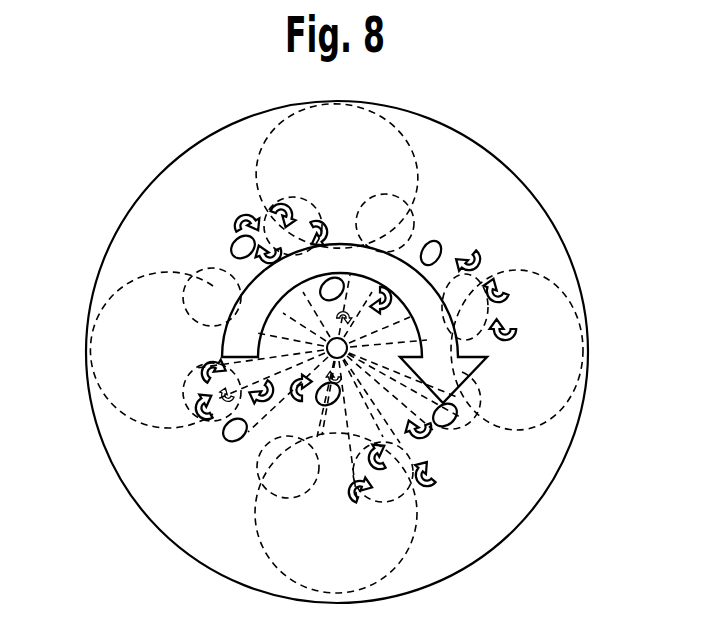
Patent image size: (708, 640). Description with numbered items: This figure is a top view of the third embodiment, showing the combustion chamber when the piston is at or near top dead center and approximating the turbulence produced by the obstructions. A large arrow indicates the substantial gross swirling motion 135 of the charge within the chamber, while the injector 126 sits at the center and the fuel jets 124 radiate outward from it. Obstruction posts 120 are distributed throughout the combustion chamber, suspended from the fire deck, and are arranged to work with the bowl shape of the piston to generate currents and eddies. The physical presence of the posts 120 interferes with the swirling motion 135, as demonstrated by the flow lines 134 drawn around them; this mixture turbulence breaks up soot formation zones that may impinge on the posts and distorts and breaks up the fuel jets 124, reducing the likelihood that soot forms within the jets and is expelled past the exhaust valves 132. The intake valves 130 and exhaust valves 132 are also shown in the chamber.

The obstruction posts 120 is at (238, 243).
The fuel jets 124 is at (417, 163).
The injector 126 is at (345, 360).
The intake valves 130 is at (548, 315).
The exhaust valves 132 is at (307, 155).
The flow lines 134 is at (267, 207).
The gross swirling motion 135 is at (447, 347).